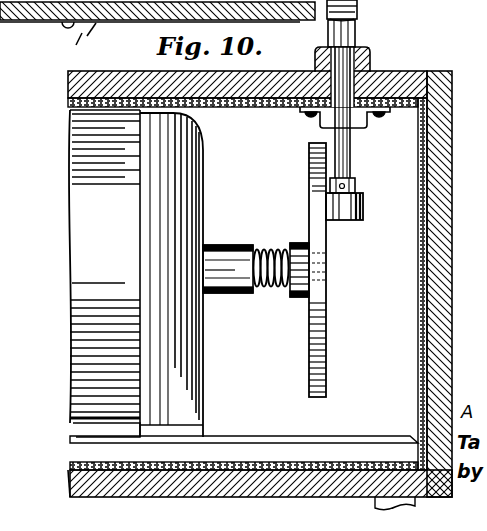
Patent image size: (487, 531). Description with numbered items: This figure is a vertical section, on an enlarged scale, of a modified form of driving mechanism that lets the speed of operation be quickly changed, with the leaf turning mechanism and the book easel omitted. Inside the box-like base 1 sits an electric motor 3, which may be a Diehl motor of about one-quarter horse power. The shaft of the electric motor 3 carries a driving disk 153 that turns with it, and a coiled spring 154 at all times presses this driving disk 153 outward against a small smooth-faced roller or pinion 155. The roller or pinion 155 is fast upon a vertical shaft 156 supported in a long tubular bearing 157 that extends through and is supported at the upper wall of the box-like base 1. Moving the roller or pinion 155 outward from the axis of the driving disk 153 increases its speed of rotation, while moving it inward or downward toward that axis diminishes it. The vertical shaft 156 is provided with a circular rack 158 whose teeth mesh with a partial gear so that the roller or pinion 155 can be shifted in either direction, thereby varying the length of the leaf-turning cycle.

The box-like base 1 is at (123, 79).
The electric motor 3 is at (178, 168).
The driving disk 153 is at (318, 213).
The coiled spring 154 is at (272, 286).
The roller or pinion 155 is at (364, 201).
The vertical shaft 156 is at (341, 38).
The tubular bearing 157 is at (348, 100).
The circular rack 158 is at (356, 15).